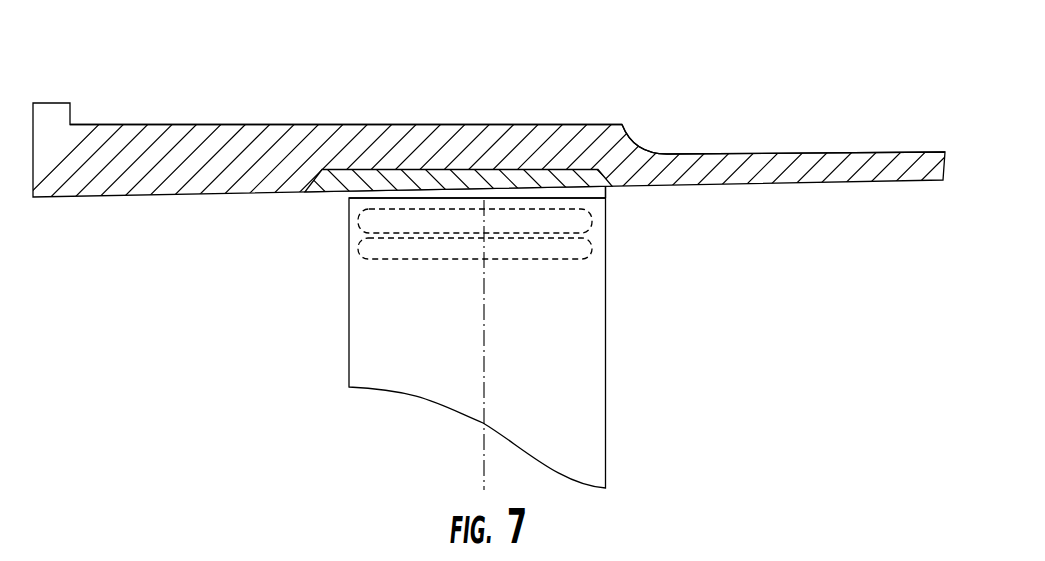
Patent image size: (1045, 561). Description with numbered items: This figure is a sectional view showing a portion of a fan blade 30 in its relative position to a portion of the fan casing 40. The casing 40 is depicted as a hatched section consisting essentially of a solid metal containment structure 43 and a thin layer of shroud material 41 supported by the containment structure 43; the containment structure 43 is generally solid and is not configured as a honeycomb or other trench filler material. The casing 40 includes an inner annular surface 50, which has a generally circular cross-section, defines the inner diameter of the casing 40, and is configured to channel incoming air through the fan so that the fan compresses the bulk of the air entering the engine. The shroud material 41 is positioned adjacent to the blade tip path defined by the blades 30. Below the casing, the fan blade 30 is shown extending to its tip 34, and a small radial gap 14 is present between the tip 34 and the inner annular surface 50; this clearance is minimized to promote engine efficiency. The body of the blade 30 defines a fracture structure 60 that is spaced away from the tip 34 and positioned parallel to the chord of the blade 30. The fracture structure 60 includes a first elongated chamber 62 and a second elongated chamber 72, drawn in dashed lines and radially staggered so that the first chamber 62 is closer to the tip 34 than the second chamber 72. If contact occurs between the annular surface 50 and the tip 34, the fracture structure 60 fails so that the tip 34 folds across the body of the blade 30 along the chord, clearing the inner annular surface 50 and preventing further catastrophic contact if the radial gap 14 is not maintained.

The fan casing 40 is at (293, 125).
The containment structure 43 is at (482, 125).
The shroud material 41 is at (626, 138).
The inner annular surface 50 is at (330, 195).
The fan blade 30 is at (605, 360).
The tip 34 is at (608, 198).
The radial gap 14 is at (608, 198).
The first elongated chamber 62 is at (362, 228).
The second elongated chamber 72 is at (377, 260).
The fracture structure 60 is at (172, 267).